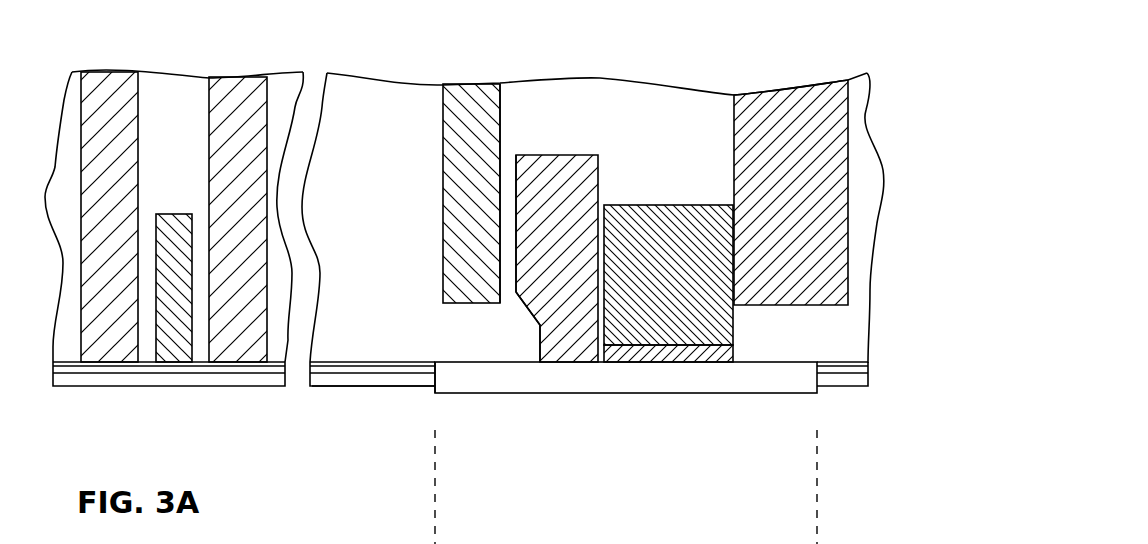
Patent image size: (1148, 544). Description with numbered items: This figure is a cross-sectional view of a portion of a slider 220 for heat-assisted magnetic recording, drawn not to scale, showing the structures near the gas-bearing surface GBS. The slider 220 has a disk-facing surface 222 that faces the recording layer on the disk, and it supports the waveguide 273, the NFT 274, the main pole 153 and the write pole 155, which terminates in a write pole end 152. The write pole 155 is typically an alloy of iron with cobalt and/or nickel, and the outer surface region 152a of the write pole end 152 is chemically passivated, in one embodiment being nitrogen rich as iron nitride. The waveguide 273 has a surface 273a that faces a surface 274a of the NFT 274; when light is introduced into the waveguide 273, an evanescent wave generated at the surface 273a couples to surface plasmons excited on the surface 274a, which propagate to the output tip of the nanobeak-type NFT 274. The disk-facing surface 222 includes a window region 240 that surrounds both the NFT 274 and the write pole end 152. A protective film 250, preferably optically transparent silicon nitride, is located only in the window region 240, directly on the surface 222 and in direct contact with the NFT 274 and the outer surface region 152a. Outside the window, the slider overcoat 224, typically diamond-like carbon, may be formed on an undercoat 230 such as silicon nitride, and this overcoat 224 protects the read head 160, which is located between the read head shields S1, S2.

The read head shield S1 is at (110, 74).
The read head shield S2 is at (235, 87).
The read head 160 is at (163, 222).
The slider 220 is at (590, 82).
The disk-facing surface 222 is at (140, 365).
The slider overcoat 224 is at (153, 381).
The undercoat 230 is at (213, 366).
The window region 240 is at (817, 397).
The protective film 250 is at (437, 380).
The gas-bearing surface GBS is at (322, 387).
The waveguide 273 is at (448, 187).
The surface of waveguide 273a is at (500, 143).
The NFT 274 is at (540, 343).
The surface of NFT 274a is at (517, 278).
The write pole 155 is at (620, 210).
The main pole 153 is at (743, 177).
The write pole end 152 is at (715, 338).
The outer surface region of write pole end 152a is at (733, 352).